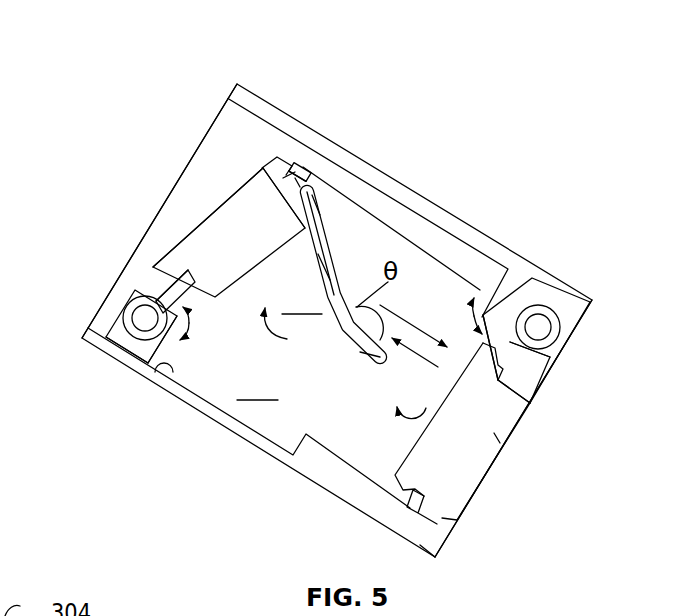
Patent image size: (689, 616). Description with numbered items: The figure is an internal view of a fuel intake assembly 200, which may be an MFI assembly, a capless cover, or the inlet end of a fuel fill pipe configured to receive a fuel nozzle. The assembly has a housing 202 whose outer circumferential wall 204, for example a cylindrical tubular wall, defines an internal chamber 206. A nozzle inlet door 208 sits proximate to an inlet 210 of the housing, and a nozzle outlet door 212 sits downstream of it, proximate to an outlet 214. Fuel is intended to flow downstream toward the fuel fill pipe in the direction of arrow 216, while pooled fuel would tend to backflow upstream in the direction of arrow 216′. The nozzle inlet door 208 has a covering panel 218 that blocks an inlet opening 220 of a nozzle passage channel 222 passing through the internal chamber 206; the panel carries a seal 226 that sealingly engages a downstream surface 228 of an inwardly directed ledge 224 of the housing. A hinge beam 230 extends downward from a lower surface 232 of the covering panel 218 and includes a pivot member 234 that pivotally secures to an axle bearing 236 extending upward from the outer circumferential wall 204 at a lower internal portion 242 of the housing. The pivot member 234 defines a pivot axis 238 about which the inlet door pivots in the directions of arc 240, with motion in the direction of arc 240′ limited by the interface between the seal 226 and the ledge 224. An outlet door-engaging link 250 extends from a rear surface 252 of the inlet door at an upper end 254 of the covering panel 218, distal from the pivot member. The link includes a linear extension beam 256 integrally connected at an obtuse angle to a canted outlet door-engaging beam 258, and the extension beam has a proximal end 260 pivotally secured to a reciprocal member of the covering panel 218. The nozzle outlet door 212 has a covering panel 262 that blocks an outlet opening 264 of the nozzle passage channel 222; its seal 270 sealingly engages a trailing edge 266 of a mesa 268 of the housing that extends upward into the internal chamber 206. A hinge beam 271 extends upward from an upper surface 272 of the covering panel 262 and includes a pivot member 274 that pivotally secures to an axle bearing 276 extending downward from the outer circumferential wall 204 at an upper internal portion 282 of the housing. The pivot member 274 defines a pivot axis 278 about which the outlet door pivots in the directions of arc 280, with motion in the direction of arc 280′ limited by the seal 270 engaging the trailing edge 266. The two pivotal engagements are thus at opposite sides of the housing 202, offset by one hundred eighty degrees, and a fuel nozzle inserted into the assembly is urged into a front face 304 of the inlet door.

The fuel intake assembly 200 is at (178, 68).
The housing 202 is at (264, 96).
The outer circumferential wall 204 is at (407, 186).
The internal chamber 206 is at (257, 388).
The nozzle inlet door 208 is at (227, 203).
The inlet 210 is at (139, 245).
The nozzle outlet door 212 is at (500, 438).
The outlet 214 is at (460, 521).
The arrow 216 is at (415, 324).
The arrow 216′ is at (413, 360).
The covering panel 218 is at (193, 263).
The inlet opening 220 is at (297, 163).
The nozzle passage channel 222 is at (301, 303).
The ledge 224 is at (298, 170).
The seal 226 is at (316, 178).
The downstream surface 228 is at (307, 163).
The hinge beam 230 is at (170, 290).
The lower surface 232 is at (210, 296).
The pivot member 234 is at (157, 332).
The axle bearing 236 is at (145, 318).
The pivot axis 238 is at (128, 360).
The arc 240 is at (190, 325).
The arc 240′ is at (297, 330).
The lower internal portion 242 is at (175, 373).
The outlet door-engaging link 250 is at (342, 297).
The rear surface 252 is at (312, 193).
The upper end 254 is at (287, 165).
The linear extension beam 256 is at (318, 254).
The outlet door-engaging beam 258 is at (356, 350).
The proximal end 260 is at (323, 202).
The covering panel 262 is at (457, 470).
The outlet opening 264 is at (508, 332).
The trailing edge 266 is at (442, 535).
The mesa 268 is at (337, 466).
The seal 270 is at (440, 540).
The hinge beam 271 is at (537, 388).
The upper surface 272 is at (522, 397).
The pivot member 274 is at (550, 357).
The axle bearing 276 is at (528, 298).
The pivot axis 278 is at (538, 328).
The arc 280 is at (472, 318).
The arc 280′ is at (422, 396).
The upper internal portion 282 is at (558, 278).
The front face 304 is at (247, 206).